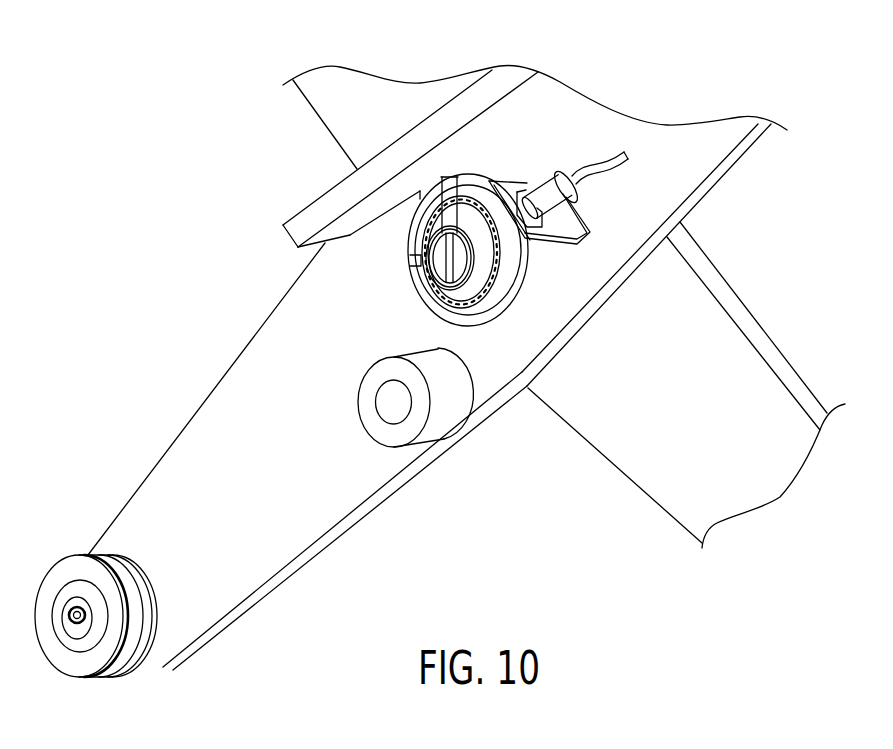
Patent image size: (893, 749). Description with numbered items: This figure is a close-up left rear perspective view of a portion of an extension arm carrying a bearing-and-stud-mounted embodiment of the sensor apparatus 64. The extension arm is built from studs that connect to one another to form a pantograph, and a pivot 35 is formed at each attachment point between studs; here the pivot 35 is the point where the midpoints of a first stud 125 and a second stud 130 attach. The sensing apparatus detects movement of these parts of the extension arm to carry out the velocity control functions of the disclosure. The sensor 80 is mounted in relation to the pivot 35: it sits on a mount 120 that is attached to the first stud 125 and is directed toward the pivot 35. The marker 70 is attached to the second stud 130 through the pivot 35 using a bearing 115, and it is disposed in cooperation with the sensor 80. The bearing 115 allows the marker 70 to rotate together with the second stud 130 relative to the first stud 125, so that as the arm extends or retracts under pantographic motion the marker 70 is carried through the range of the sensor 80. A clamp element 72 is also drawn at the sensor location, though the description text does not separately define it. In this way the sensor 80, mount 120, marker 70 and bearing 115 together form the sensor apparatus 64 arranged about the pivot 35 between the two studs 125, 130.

The pivot 35 is at (418, 250).
The sensor apparatus 64 is at (595, 128).
The marker 70 is at (449, 175).
The clamp 72 is at (520, 195).
The sensor 80 is at (548, 188).
The bearing 115 is at (505, 257).
The mount 120 is at (575, 218).
The first stud 125 is at (350, 497).
The second stud 130 is at (768, 348).